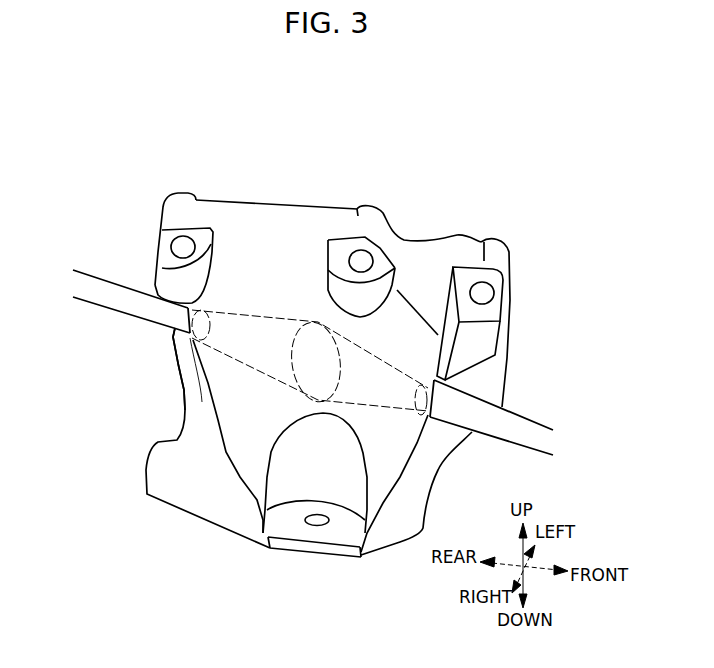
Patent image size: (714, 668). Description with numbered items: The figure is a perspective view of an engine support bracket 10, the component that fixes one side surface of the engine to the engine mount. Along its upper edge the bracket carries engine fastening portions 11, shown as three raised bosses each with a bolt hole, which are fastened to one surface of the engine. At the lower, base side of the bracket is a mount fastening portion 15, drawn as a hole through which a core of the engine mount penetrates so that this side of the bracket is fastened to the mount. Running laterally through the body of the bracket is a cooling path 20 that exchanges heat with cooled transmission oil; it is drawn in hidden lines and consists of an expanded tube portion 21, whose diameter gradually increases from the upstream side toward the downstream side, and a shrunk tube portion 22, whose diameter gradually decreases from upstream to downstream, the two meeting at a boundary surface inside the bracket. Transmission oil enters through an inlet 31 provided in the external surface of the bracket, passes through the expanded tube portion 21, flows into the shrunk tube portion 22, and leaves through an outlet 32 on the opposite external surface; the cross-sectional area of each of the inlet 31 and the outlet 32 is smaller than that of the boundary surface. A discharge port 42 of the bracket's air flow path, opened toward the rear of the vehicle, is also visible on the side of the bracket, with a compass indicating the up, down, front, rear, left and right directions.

The engine support bracket 10 is at (167, 118).
The engine fastening portion 11 is at (186, 246).
The mount fastening portion 15 is at (315, 522).
The cooling path 20 is at (117, 611).
The expanded tube portion 21 is at (357, 378).
The shrunk tube portion 22 is at (262, 351).
The inlet 31 is at (458, 410).
The outlet 32 is at (173, 315).
The discharge port 42 is at (182, 381).